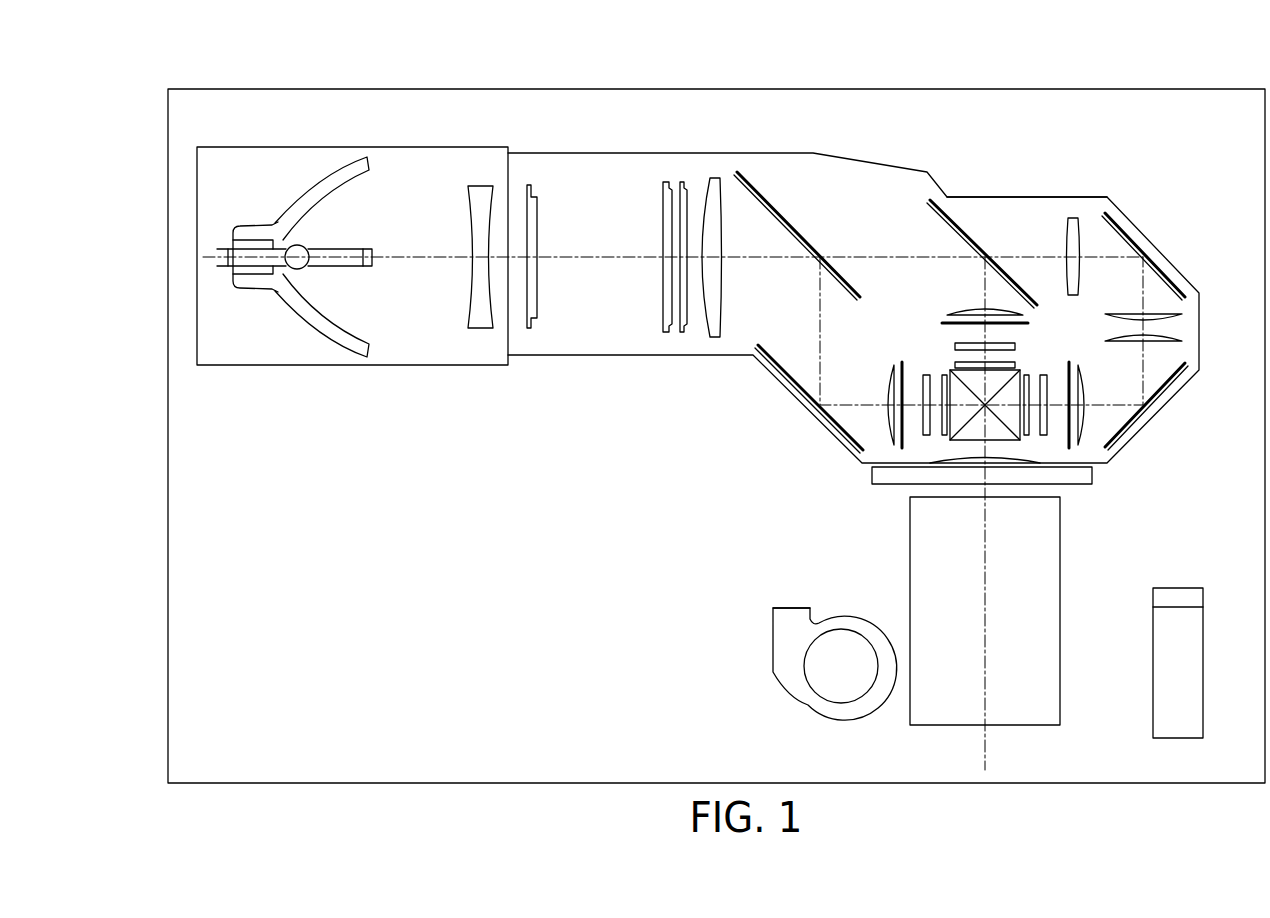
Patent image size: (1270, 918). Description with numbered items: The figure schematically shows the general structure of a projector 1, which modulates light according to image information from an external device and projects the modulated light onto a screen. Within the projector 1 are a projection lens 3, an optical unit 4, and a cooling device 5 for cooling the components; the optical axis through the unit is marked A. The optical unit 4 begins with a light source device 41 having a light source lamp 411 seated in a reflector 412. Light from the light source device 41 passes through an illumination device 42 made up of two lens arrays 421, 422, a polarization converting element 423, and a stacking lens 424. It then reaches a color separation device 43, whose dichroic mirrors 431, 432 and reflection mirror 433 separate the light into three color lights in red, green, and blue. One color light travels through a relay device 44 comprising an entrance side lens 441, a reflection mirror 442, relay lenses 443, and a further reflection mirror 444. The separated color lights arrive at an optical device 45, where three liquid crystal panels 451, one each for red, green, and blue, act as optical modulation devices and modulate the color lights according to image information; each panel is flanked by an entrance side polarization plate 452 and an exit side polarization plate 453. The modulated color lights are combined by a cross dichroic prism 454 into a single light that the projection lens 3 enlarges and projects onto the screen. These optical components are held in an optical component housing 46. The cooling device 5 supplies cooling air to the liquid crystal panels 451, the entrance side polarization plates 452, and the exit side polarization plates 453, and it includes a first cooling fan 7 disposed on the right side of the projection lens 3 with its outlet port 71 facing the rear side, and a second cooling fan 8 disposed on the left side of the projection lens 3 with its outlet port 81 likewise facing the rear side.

The projector 1 is at (1048, 84).
The projection lens 3 is at (1063, 685).
The optical unit 4 is at (696, 371).
The cooling device 5 is at (1135, 748).
The first cooling fan 7 is at (1153, 648).
The outlet port 71 is at (1180, 588).
The second cooling fan 8 is at (828, 712).
The outlet port 81 is at (790, 607).
The light source device 41 is at (288, 56).
The light source lamp 411 is at (344, 246).
The reflector 412 is at (343, 172).
The illumination device 42 is at (672, 124).
The lens array 421 is at (538, 220).
The lens array 422 is at (666, 187).
The polarization converting element 423 is at (687, 188).
The stacking lens 424 is at (717, 208).
The color separation device 43 is at (877, 194).
The dichroic mirror 431 is at (773, 203).
The dichroic mirror 432 is at (943, 207).
The reflection mirror 433 is at (784, 360).
The relay device 44 is at (1150, 227).
The entrance side lens 441 is at (1073, 217).
The reflection mirror 442 is at (1168, 273).
The relay lenses 443 is at (1185, 338).
The reflection mirror 444 is at (1133, 427).
The optical device 45 is at (1078, 314).
The liquid crystal panel 451 is at (822, 525).
The entrance side polarization plate 452 is at (941, 320).
The exit side polarization plate 453 is at (1017, 365).
The cross dichroic prism 454 is at (993, 434).
The optical component housing 46 is at (998, 196).
The illumination optical axis A is at (423, 260).